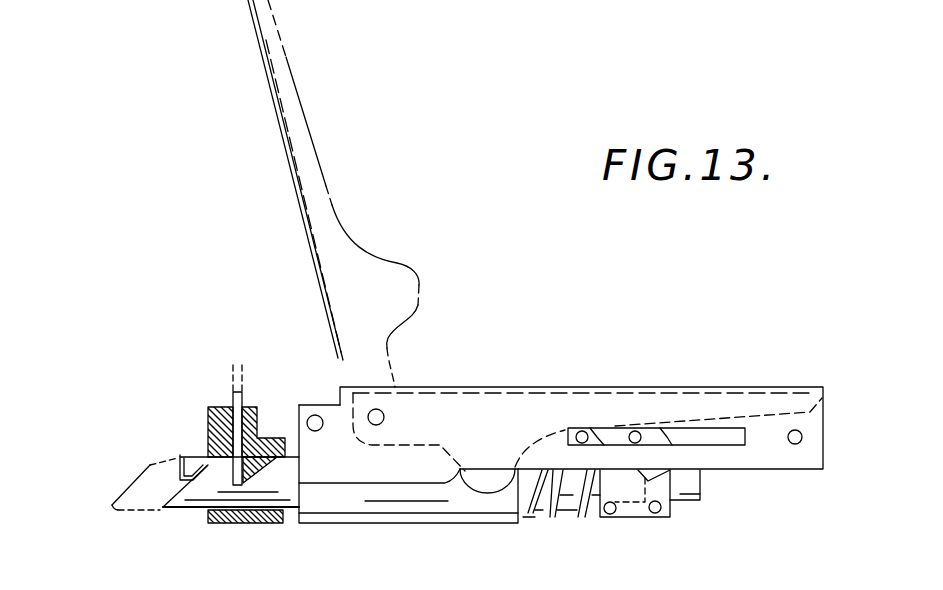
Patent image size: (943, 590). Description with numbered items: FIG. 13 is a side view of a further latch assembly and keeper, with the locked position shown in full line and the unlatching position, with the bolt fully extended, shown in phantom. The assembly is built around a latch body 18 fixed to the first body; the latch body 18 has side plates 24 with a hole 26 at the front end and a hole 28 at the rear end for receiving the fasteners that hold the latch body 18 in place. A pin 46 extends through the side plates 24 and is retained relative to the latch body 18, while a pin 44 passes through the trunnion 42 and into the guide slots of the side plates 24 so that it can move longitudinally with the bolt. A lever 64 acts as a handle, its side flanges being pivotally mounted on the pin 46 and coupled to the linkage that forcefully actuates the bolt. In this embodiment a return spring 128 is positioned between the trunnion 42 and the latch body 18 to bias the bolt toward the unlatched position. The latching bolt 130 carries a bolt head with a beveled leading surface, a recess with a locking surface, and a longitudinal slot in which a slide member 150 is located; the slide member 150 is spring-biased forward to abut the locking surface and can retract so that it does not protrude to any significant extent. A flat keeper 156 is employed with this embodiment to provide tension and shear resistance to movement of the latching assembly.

The lever 64 is at (286, 80).
The side plates 24 is at (772, 471).
The hole 28 is at (802, 433).
The pin 44 is at (638, 431).
The hole 26 is at (314, 415).
The pin 46 is at (372, 420).
The latch body 18 is at (372, 514).
The return spring 128 is at (553, 519).
The trunnion 42 is at (637, 511).
The latching bolt 130 is at (200, 504).
The flat keeper 156 is at (198, 420).
The slide member 150 is at (258, 458).